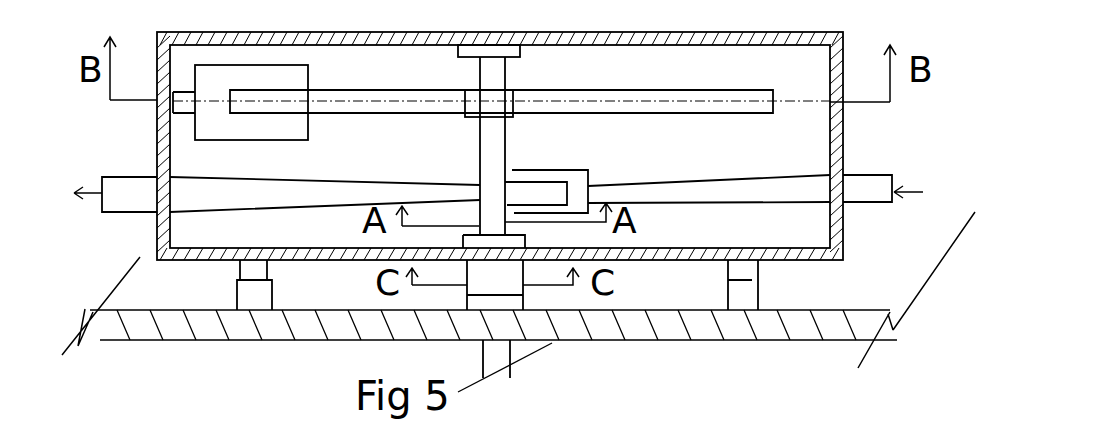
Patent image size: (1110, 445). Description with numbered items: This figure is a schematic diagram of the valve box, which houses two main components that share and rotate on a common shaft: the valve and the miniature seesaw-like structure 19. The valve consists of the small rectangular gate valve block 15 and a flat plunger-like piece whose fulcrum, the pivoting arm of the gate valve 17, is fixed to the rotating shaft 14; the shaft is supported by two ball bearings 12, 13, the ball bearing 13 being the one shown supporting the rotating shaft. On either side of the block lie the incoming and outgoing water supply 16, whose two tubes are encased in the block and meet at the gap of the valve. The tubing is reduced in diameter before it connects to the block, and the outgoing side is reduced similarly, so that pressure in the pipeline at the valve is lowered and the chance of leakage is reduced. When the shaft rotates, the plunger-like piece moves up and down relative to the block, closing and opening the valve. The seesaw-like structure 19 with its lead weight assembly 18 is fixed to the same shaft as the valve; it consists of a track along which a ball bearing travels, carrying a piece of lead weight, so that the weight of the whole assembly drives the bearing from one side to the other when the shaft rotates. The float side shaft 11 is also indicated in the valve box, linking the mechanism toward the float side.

The float side shaft 11 is at (523, 299).
The ball bearing 12 is at (528, 240).
The ball bearing supporting the rotating shaft 13 is at (522, 44).
The rotating shaft 14 is at (508, 141).
The gate valve block 15 is at (590, 173).
The incoming and outgoing water supply 16 is at (420, 184).
The pivoting arm of the gate valve 17 is at (492, 188).
The lead weight assembly 18 is at (276, 142).
The seesaw-like structure 19 is at (345, 89).